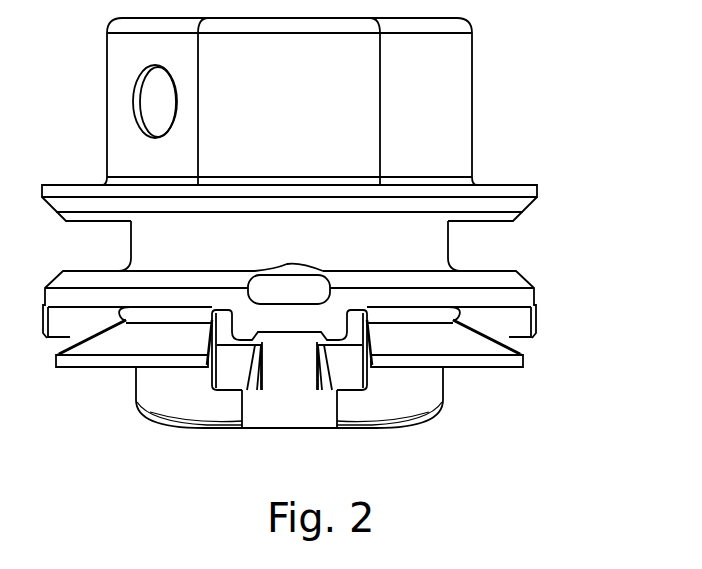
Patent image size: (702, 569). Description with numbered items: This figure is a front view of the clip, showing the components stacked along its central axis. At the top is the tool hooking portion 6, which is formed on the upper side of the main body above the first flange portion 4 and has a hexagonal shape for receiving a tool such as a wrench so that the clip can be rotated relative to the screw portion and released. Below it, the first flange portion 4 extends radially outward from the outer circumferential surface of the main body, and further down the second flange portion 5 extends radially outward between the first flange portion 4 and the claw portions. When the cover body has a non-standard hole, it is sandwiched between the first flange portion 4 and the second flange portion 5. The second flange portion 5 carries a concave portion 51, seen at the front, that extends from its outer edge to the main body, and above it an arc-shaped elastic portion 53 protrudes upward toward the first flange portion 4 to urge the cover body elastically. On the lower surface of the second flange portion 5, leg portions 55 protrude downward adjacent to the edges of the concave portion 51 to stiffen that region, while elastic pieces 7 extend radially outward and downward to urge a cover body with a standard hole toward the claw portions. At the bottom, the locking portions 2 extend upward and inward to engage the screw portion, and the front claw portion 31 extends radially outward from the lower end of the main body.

The tool hooking portion 6 is at (295, 113).
The first flange portion 4 is at (532, 191).
The second flange portion 5 is at (524, 298).
The concave portion 51 is at (270, 292).
The elastic portion 53 is at (287, 271).
The elastic piece 7 is at (158, 347).
The locking portion 2 is at (236, 379).
The leg portion 55 is at (238, 324).
The front claw portion 31 is at (312, 417).